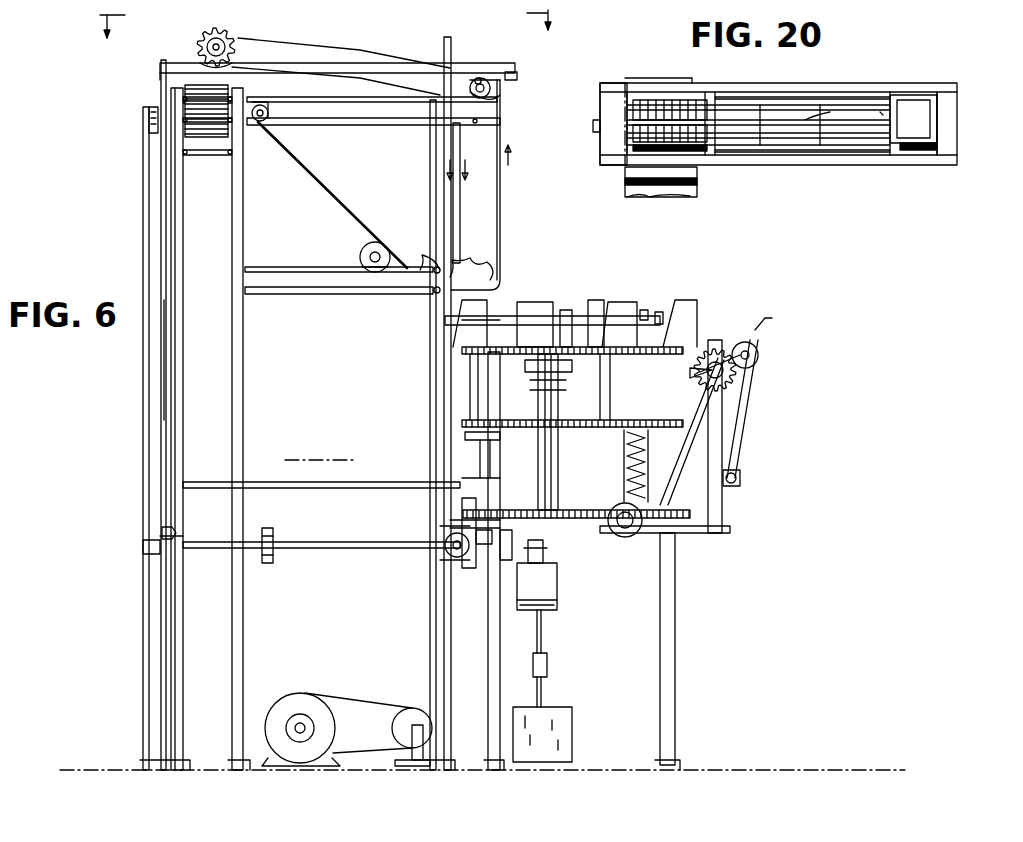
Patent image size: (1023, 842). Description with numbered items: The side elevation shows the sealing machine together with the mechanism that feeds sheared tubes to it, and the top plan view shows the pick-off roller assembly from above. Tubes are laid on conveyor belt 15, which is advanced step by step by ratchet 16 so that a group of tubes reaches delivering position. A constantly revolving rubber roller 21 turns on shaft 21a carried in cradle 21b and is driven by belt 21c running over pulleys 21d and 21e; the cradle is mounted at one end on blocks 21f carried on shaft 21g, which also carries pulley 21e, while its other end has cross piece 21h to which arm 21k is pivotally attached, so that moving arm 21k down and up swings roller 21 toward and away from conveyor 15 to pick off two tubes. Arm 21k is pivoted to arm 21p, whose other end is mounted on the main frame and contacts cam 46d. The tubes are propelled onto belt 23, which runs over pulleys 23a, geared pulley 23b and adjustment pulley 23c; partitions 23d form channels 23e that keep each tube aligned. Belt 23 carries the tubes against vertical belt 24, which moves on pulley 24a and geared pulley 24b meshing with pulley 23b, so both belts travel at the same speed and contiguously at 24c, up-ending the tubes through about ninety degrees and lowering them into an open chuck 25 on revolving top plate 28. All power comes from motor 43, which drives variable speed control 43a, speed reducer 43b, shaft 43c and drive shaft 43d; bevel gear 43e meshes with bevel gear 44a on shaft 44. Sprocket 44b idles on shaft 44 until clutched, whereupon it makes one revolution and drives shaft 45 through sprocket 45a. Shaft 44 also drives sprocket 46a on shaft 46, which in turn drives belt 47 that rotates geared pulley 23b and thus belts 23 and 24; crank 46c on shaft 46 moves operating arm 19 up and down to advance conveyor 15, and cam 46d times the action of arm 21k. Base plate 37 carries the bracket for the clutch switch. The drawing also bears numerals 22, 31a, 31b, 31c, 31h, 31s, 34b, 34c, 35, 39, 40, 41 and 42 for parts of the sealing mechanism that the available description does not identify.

In FIG. 6, the conveyor belt 15 is at (207, 140).
In FIG. 20, the ratchet 16 is at (660, 197).
In FIG. 6, the operating arm 19 is at (143, 236).
In FIG. 6, the roller 21 is at (234, 28).
In FIG. 20, the roller 21 is at (635, 136).
In FIG. 6, the shaft 21a is at (200, 52).
In FIG. 20, the shaft 21a is at (670, 98).
In FIG. 6, the cradle 21b is at (292, 60).
In FIG. 20, the cradle 21b is at (828, 90).
In FIG. 6, the belt 21c is at (352, 55).
In FIG. 20, the belt 21c is at (775, 155).
In FIG. 6, the pulley 21d is at (205, 40).
In FIG. 20, the pulley 21d is at (640, 150).
In FIG. 6, the pulley 21e is at (492, 90).
In FIG. 20, the pulley 21e is at (940, 150).
In FIG. 6, the blocks 21f is at (477, 78).
In FIG. 6, the shaft 21g is at (508, 72).
In FIG. 20, the shaft 21g is at (915, 95).
In FIG. 20, the cross piece 21h is at (600, 97).
In FIG. 6, the arm 21k is at (170, 376).
In FIG. 20, the arm 21k is at (594, 124).
In FIG. 6, the arm 21p is at (160, 532).
In FIG. 6, the section line 22 is at (326, 26).
In FIG. 6, the belt 23 is at (328, 190).
In FIG. 20, the belt 23 is at (770, 105).
In FIG. 6, the pulleys 23a is at (282, 128).
In FIG. 6, the geared pulley 23b is at (420, 262).
In FIG. 6, the adjustment pulley 23c is at (360, 255).
In FIG. 20, the partitions 23d is at (740, 99).
In FIG. 20, the channels 23e is at (828, 128).
In FIG. 6, the belt 24 is at (503, 190).
In FIG. 20, the belt 24 is at (937, 112).
In FIG. 6, the pulley 24a is at (498, 108).
In FIG. 6, the geared pulley 24b is at (490, 262).
In FIG. 6, the contiguous portions 24c is at (462, 200).
In FIG. 6, the chuck 25 is at (470, 302).
In FIG. 6, the revolving top plate 28 is at (605, 302).
In FIG. 6, the arm 31a is at (759, 413).
In FIG. 6, the link 31b is at (754, 365).
In FIG. 6, the crank link 31c is at (745, 395).
In FIG. 6, the gear 31h is at (700, 380).
In FIG. 6, the roller 31s is at (740, 344).
In FIG. 6, the roller 34b is at (628, 538).
In FIG. 6, the platform 34c is at (630, 405).
In FIG. 6, the hopper block 35 is at (558, 600).
In FIG. 6, the base plate 37 is at (680, 512).
In FIG. 6, the spring 39 is at (646, 466).
In FIG. 6, the strut 40 is at (692, 436).
In FIG. 6, the cylinder 41 is at (590, 392).
In FIG. 6, the bracket 42 is at (590, 372).
In FIG. 6, the motor 43 is at (310, 698).
In FIG. 6, the variable speed control 43a is at (420, 710).
In FIG. 6, the speed reducer 43b is at (573, 742).
In FIG. 6, the shaft 43c is at (542, 688).
In FIG. 6, the drive shaft 43d is at (542, 642).
In FIG. 6, the bevel gear 43e is at (545, 555).
In FIG. 6, the shaft 44 is at (478, 560).
In FIG. 6, the bevel gear 44a is at (515, 556).
In FIG. 6, the sprocket 44b is at (448, 556).
In FIG. 6, the shaft 45 is at (107, 477).
In FIG. 6, the sprocket 45a is at (480, 472).
In FIG. 6, the shaft 46 is at (372, 545).
In FIG. 6, the sprocket 46a is at (274, 532).
In FIG. 6, the crank 46c is at (150, 556).
In FIG. 6, the cam 46d is at (168, 560).
In FIG. 6, the belt 47 is at (425, 405).